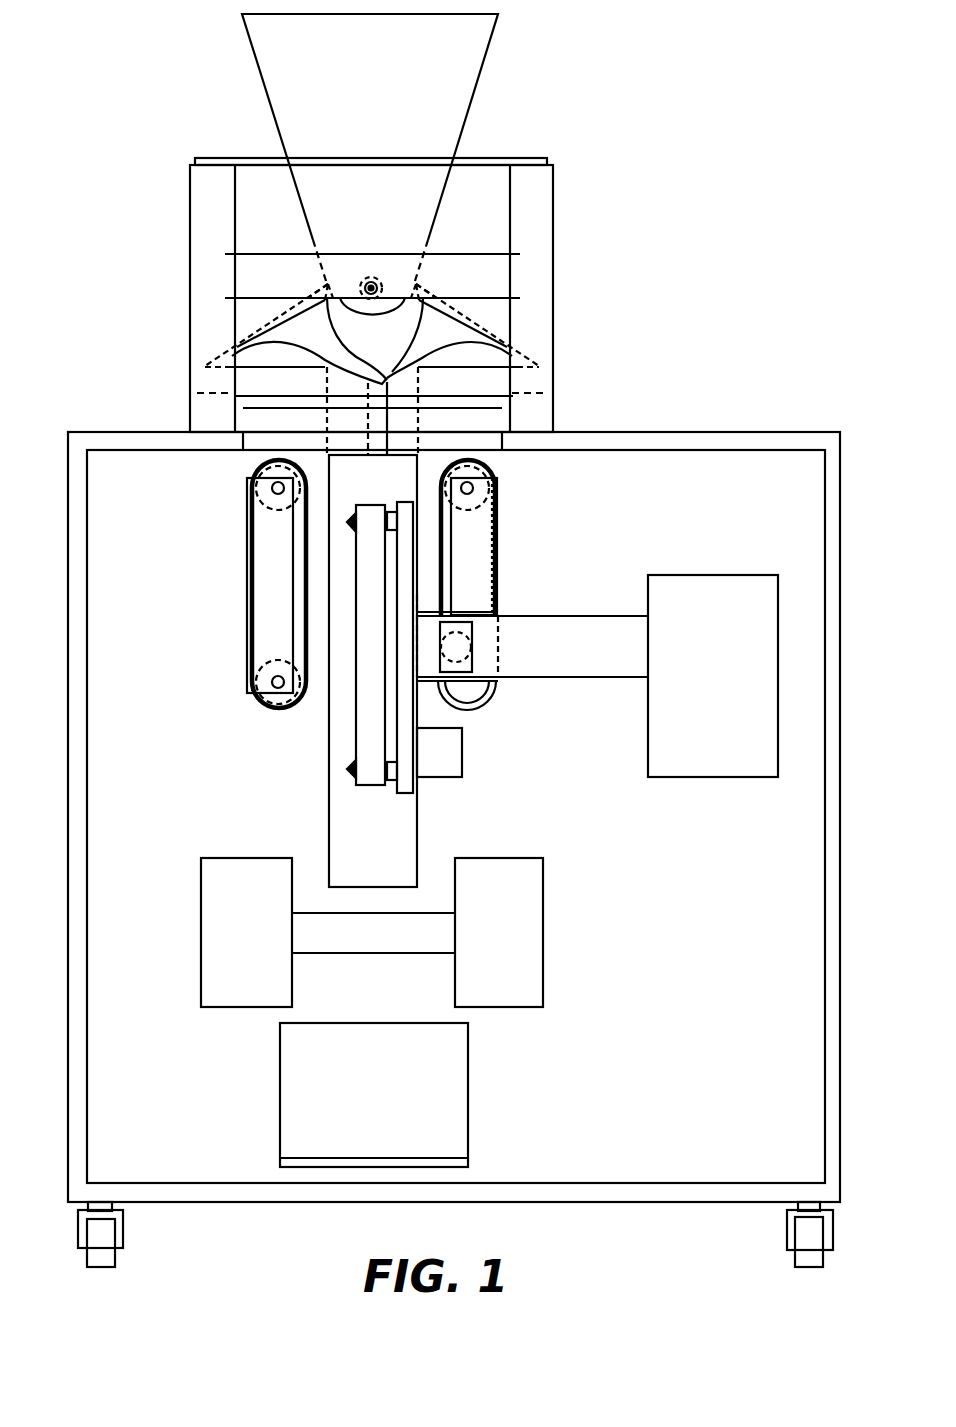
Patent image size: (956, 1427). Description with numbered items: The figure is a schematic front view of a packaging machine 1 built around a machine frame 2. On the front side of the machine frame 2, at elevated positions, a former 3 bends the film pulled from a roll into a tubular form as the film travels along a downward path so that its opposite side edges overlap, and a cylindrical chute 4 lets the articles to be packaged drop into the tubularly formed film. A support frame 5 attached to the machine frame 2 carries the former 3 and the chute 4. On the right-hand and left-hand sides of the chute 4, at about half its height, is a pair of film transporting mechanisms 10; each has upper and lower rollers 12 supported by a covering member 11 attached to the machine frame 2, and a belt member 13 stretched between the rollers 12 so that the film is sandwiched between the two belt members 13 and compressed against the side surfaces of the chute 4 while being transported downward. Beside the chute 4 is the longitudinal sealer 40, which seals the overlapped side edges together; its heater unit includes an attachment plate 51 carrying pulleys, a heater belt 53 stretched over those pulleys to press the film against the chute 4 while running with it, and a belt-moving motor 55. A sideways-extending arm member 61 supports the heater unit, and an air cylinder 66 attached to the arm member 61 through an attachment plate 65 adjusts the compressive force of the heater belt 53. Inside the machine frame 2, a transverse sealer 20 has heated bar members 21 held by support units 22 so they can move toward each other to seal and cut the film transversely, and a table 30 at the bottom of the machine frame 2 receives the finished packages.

The packaging machine 1 is at (715, 123).
The machine frame 2 is at (739, 433).
The former 3 is at (460, 328).
The chute 4 is at (340, 813).
The support frame 5 is at (533, 233).
The film transporting mechanism 10 is at (391, 614).
The covering member 11 is at (260, 568).
The roller 12 is at (262, 495).
The belt member 13 is at (282, 707).
The transverse sealer 20 is at (370, 896).
The bar member 21 is at (373, 940).
The support unit 22 is at (247, 929).
The table 30 is at (423, 1082).
The longitudinal sealer 40 is at (689, 527).
The attachment plate 51 is at (408, 780).
The heater belt 53 is at (370, 777).
The belt-moving motor 55 is at (447, 752).
The arm member 61 is at (562, 665).
The attachment plate 65 is at (470, 684).
The air cylinder 66 is at (472, 645).